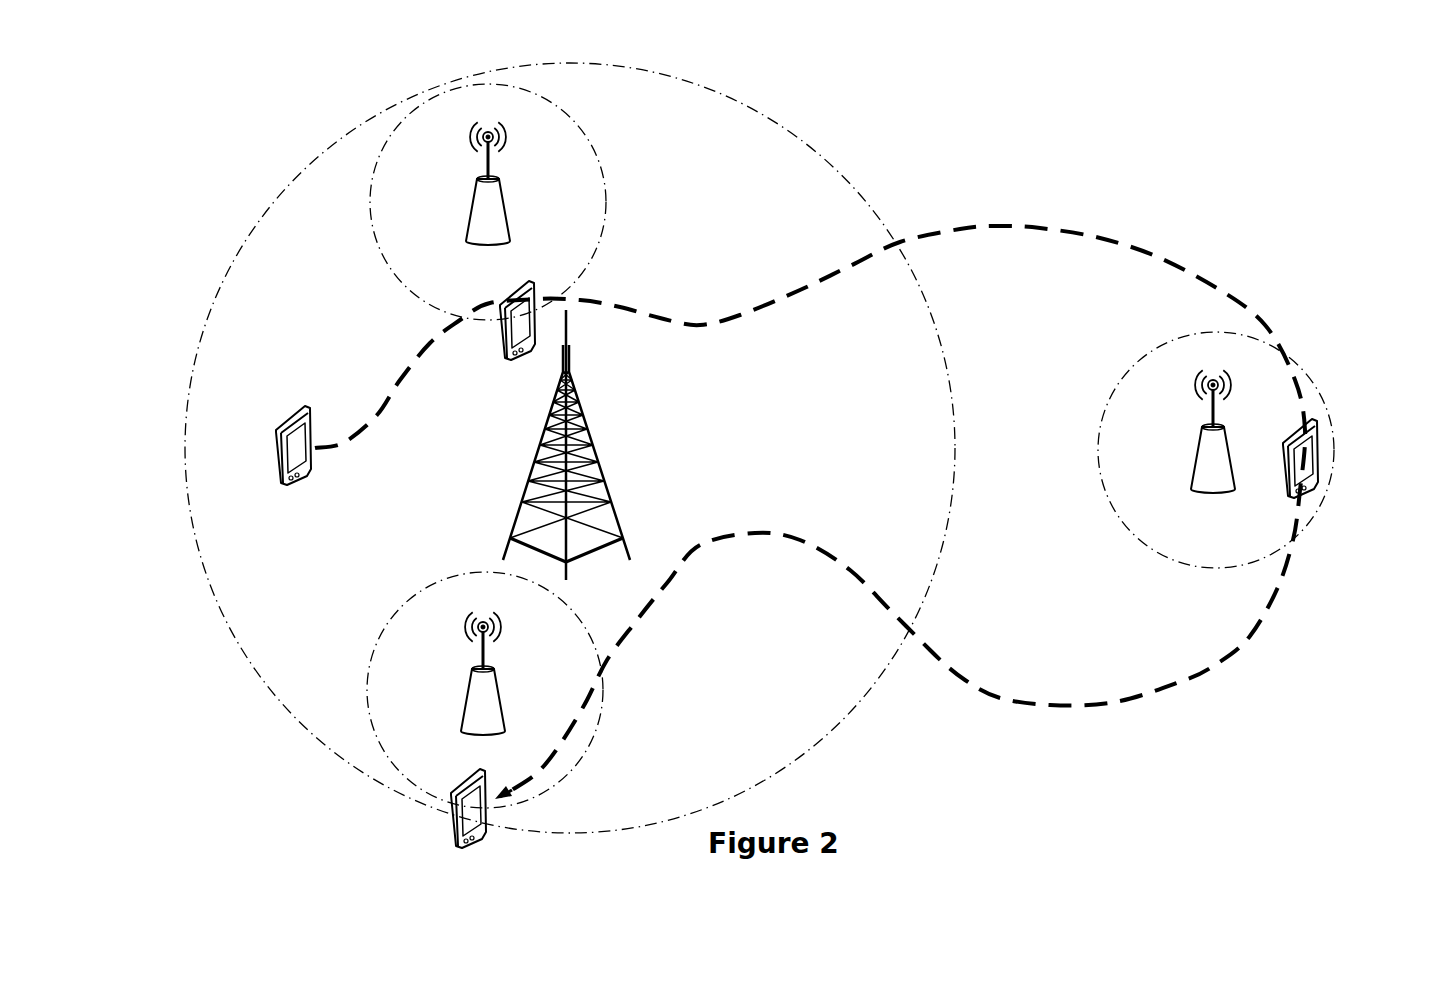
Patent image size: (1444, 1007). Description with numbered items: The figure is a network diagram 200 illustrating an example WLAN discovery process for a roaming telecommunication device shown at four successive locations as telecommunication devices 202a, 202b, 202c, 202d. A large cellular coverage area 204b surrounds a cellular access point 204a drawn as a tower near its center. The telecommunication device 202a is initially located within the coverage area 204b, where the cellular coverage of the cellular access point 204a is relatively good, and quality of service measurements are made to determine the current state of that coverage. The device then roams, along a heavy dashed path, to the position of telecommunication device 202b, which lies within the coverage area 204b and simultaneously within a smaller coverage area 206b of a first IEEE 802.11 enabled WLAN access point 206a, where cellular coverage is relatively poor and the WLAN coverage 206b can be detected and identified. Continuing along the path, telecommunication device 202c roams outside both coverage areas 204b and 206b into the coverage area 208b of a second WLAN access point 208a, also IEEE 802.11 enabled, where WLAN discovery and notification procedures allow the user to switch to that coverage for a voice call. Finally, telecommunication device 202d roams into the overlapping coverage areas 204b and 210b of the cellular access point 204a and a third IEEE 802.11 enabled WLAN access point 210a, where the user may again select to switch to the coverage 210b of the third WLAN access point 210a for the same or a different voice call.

The network diagram 200 is at (190, 80).
The telecommunication device 202a is at (294, 402).
The telecommunication device 202b is at (511, 358).
The telecommunication device 202c is at (1326, 440).
The telecommunication device 202d is at (446, 823).
The cellular access point 204a is at (583, 400).
The coverage area 204b is at (850, 166).
The WLAN access point 206a is at (473, 177).
The coverage area 206b is at (386, 276).
The WLAN access point 208a is at (1200, 426).
The coverage area 208b is at (1131, 358).
The WLAN access point 210a is at (471, 668).
The coverage area 210b is at (406, 592).